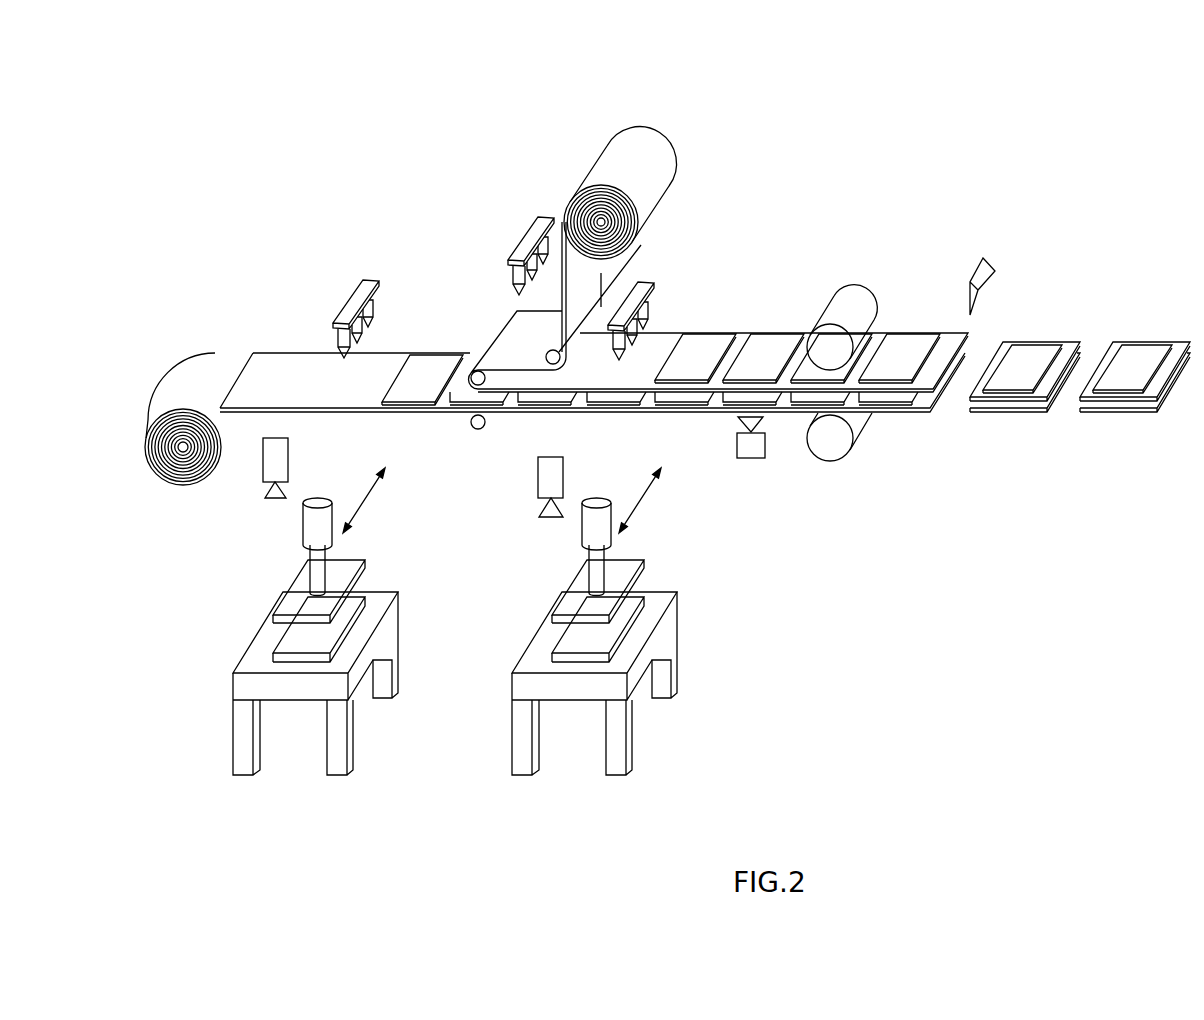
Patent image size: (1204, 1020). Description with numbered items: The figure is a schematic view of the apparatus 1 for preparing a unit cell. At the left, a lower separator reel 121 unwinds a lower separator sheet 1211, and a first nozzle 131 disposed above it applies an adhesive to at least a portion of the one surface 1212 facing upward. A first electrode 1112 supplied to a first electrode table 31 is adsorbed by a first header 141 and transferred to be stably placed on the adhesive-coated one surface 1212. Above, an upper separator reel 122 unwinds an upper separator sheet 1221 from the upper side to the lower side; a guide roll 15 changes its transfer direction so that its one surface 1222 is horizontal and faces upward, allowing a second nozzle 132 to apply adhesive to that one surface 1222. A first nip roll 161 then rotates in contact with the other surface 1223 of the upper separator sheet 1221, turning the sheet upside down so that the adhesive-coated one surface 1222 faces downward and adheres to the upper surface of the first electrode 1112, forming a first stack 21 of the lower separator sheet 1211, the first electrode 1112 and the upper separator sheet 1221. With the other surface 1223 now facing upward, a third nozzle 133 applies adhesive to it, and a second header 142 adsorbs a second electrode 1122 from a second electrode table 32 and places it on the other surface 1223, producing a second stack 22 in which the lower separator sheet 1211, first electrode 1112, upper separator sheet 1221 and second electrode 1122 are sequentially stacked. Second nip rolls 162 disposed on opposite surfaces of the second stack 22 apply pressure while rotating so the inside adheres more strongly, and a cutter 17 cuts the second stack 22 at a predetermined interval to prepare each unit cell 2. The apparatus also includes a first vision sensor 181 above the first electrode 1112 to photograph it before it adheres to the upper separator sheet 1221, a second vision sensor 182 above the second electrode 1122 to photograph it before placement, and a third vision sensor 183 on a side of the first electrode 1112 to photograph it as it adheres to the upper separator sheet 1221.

The apparatus for preparing a unit cell 1 is at (883, 120).
The unit cell 2 is at (1123, 410).
The guide roll 15 is at (547, 357).
The cutter 17 is at (983, 258).
The first stack 21 is at (673, 328).
The second stack 22 is at (809, 310).
The first electrode table 31 is at (238, 686).
The second electrode table 32 is at (518, 686).
The lower separator reel 121 is at (181, 486).
The upper separator reel 122 is at (622, 150).
The first nozzle 131 is at (352, 298).
The second nozzle 132 is at (530, 218).
The third nozzle 133 is at (654, 281).
The first header 141 is at (365, 570).
The second header 142 is at (645, 570).
The first nip roll 161 is at (481, 424).
The second nip roll 162 is at (838, 444).
The first vision sensor 181 is at (288, 458).
The second vision sensor 182 is at (538, 476).
The third vision sensor 183 is at (737, 437).
The first electrode 1112 is at (346, 635).
The second electrode 1122 is at (625, 635).
The lower separator sheet 1211 is at (398, 353).
The one surface of the lower separator sheet 1212 is at (385, 363).
The upper separator sheet 1221 is at (596, 280).
The one surface of the upper separator sheet 1222 is at (517, 320).
The other surface of the upper separator sheet 1223 is at (612, 373).